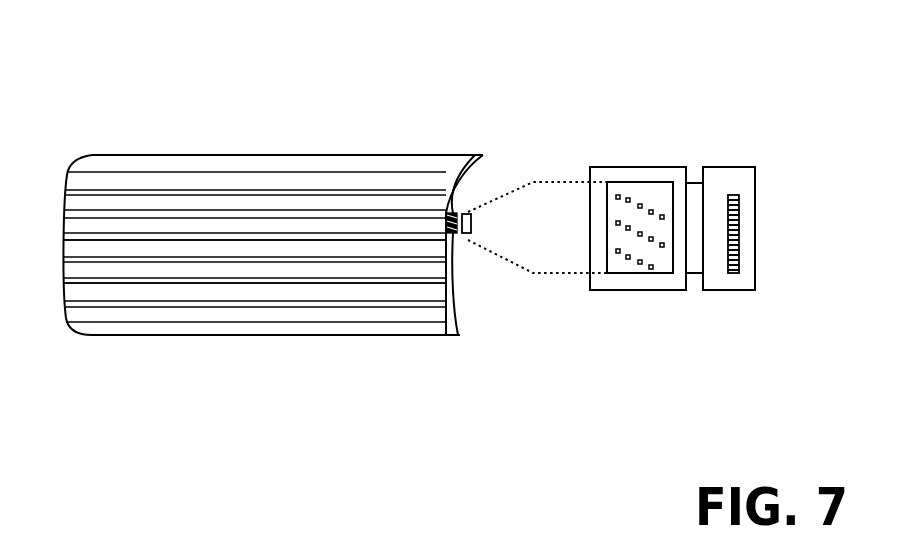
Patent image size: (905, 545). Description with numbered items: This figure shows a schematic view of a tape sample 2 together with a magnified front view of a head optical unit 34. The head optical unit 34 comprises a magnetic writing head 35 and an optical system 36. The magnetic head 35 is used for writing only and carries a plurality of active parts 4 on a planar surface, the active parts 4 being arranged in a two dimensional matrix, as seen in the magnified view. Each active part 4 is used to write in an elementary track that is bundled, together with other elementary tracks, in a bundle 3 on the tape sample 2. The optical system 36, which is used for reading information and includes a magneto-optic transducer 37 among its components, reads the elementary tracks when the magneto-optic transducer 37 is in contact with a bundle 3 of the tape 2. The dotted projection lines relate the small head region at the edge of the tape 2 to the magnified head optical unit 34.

The tape 2 is at (183, 160).
The bundle 3 is at (238, 270).
The active parts 4 is at (628, 229).
The head optical unit 34 is at (663, 167).
The magnetic writing head 35 is at (613, 183).
The optical system 36 is at (733, 181).
The magneto-optic transducer 37 is at (737, 270).